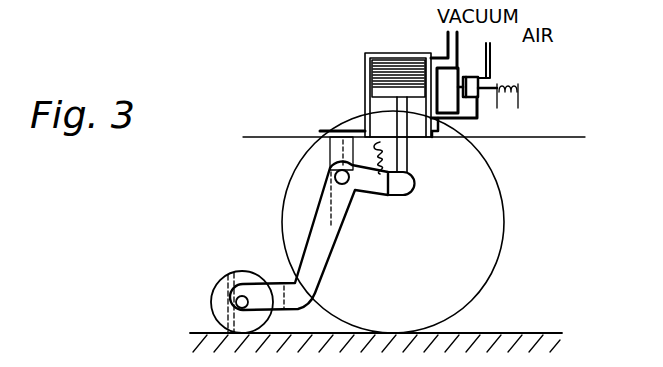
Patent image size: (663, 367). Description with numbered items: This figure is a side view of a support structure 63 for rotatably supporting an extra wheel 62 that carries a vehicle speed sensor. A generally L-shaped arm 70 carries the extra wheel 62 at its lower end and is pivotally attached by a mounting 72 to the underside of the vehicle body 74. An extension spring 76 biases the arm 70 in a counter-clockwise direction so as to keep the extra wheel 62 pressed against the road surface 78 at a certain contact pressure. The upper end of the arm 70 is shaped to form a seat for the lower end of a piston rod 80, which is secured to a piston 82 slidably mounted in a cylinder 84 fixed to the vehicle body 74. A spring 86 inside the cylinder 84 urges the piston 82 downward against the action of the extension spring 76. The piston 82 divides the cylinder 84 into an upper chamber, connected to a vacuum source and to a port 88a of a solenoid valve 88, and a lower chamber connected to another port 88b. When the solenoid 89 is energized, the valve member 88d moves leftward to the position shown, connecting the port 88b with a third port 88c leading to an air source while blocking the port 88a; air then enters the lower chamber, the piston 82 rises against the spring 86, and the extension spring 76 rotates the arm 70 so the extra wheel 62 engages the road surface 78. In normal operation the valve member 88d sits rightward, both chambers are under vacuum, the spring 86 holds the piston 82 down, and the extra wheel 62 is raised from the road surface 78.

The extra wheel 62 is at (212, 300).
The support structure 63 is at (293, 214).
The L-shaped arm 70 is at (328, 254).
The mounting 72 is at (330, 152).
The vehicle body 74 is at (500, 138).
The extension spring 76 is at (367, 183).
The road surface 78 is at (511, 333).
The piston rod 80 is at (410, 173).
The piston 82 is at (400, 88).
The cylinder 84 is at (368, 100).
The spring 86 is at (388, 67).
The solenoid valve 88 is at (474, 74).
The port 88a is at (458, 94).
The port 88b is at (472, 93).
The third port 88c is at (492, 80).
The valve member 88d is at (480, 110).
The solenoid 89 is at (519, 88).